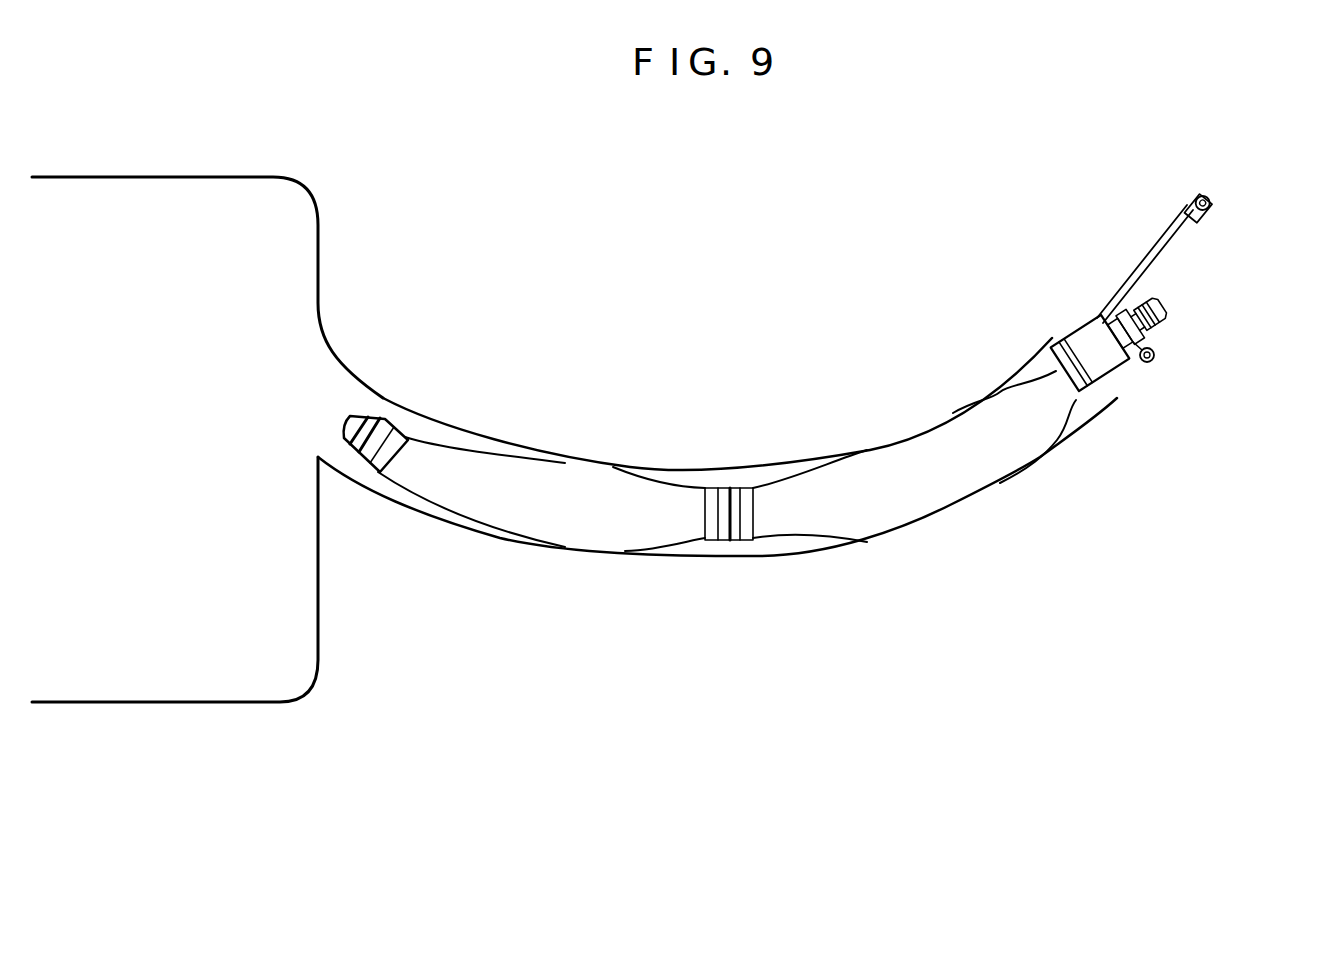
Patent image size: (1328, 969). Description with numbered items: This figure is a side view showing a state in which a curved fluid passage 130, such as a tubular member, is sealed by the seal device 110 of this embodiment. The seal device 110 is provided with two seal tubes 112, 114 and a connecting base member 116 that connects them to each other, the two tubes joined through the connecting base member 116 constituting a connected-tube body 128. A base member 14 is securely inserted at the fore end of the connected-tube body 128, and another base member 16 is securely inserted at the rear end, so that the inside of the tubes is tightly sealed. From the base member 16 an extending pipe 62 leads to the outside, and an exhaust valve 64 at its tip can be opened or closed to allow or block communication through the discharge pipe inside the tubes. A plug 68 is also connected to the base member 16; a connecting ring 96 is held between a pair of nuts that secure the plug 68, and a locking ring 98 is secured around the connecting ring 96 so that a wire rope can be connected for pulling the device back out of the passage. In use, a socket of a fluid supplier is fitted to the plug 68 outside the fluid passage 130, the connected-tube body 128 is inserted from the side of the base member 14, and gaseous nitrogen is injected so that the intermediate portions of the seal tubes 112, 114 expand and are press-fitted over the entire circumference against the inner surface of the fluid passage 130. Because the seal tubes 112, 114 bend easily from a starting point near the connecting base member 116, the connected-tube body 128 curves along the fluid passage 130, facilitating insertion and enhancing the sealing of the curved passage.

The base member 14 is at (345, 440).
The base member 16 is at (1082, 340).
The extending pipe 62 is at (1140, 260).
The exhaust valve 64 is at (1212, 195).
The plug 68 is at (1172, 312).
The connecting ring 96 is at (1108, 325).
The locking ring 98 is at (1150, 362).
The seal device 110 is at (1215, 372).
The seal tube 112 is at (795, 543).
The seal tube 114 is at (660, 468).
The connecting base member 116 is at (723, 545).
The connected-tube body 128 is at (735, 483).
The fluid passage 130 is at (382, 398).